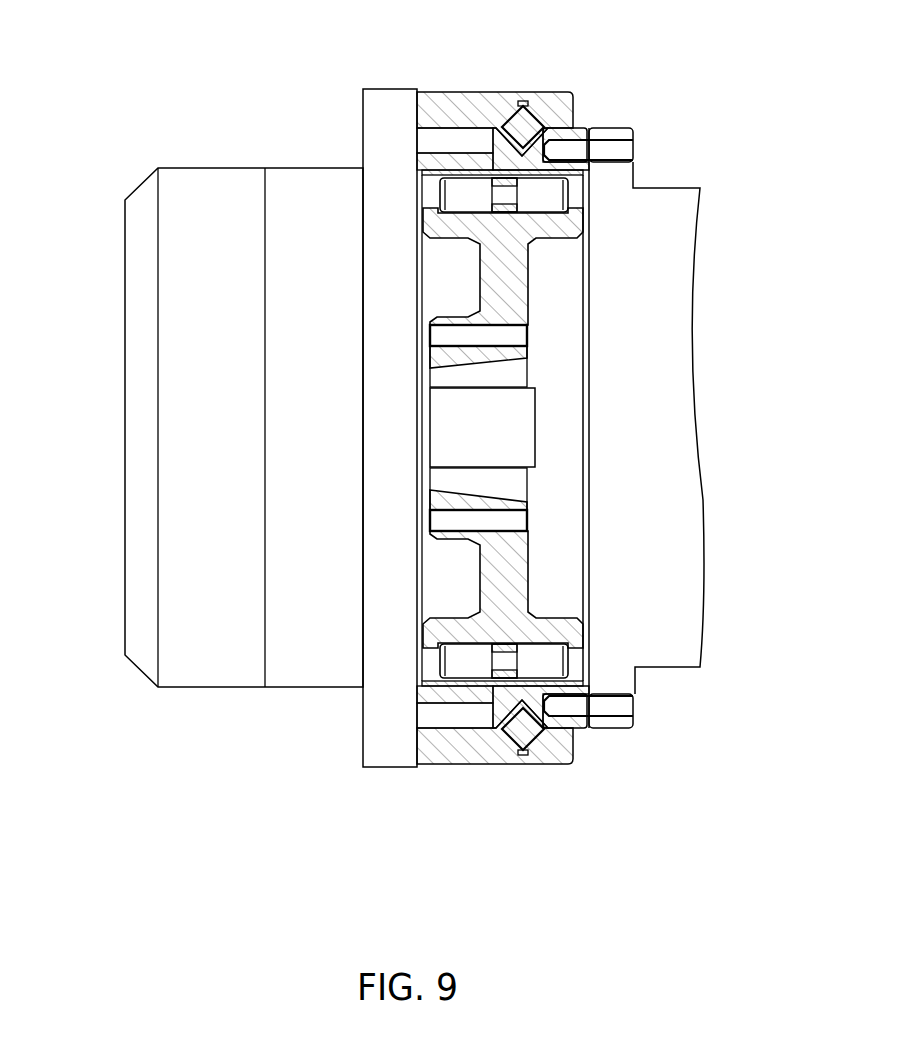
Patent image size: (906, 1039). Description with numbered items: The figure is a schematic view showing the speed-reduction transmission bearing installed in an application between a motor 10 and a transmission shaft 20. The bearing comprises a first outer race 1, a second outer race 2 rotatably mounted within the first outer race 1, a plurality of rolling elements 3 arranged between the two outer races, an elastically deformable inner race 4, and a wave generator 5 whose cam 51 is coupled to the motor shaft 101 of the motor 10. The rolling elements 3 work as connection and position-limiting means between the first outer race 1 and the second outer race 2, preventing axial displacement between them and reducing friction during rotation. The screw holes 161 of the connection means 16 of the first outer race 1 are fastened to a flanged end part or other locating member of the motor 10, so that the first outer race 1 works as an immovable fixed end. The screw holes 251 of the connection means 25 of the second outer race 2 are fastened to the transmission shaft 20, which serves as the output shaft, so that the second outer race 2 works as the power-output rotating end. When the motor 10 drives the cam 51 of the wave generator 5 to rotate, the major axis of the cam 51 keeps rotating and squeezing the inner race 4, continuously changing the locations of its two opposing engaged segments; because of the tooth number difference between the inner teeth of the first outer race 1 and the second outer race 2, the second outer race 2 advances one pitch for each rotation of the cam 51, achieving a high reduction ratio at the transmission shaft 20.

The first outer race 1 is at (476, 428).
The connection means 16 is at (435, 374).
The screw holes 161 is at (446, 138).
The second outer race 2 is at (577, 724).
The connection means 25 is at (588, 374).
The screw holes 251 is at (583, 135).
The rolling elements 3 is at (520, 730).
The inner race 4 is at (570, 680).
The wave generator 5 is at (528, 305).
The cam 51 is at (507, 263).
The motor 10 is at (185, 424).
The motor shaft 101 is at (505, 422).
The transmission shaft 20 is at (673, 542).